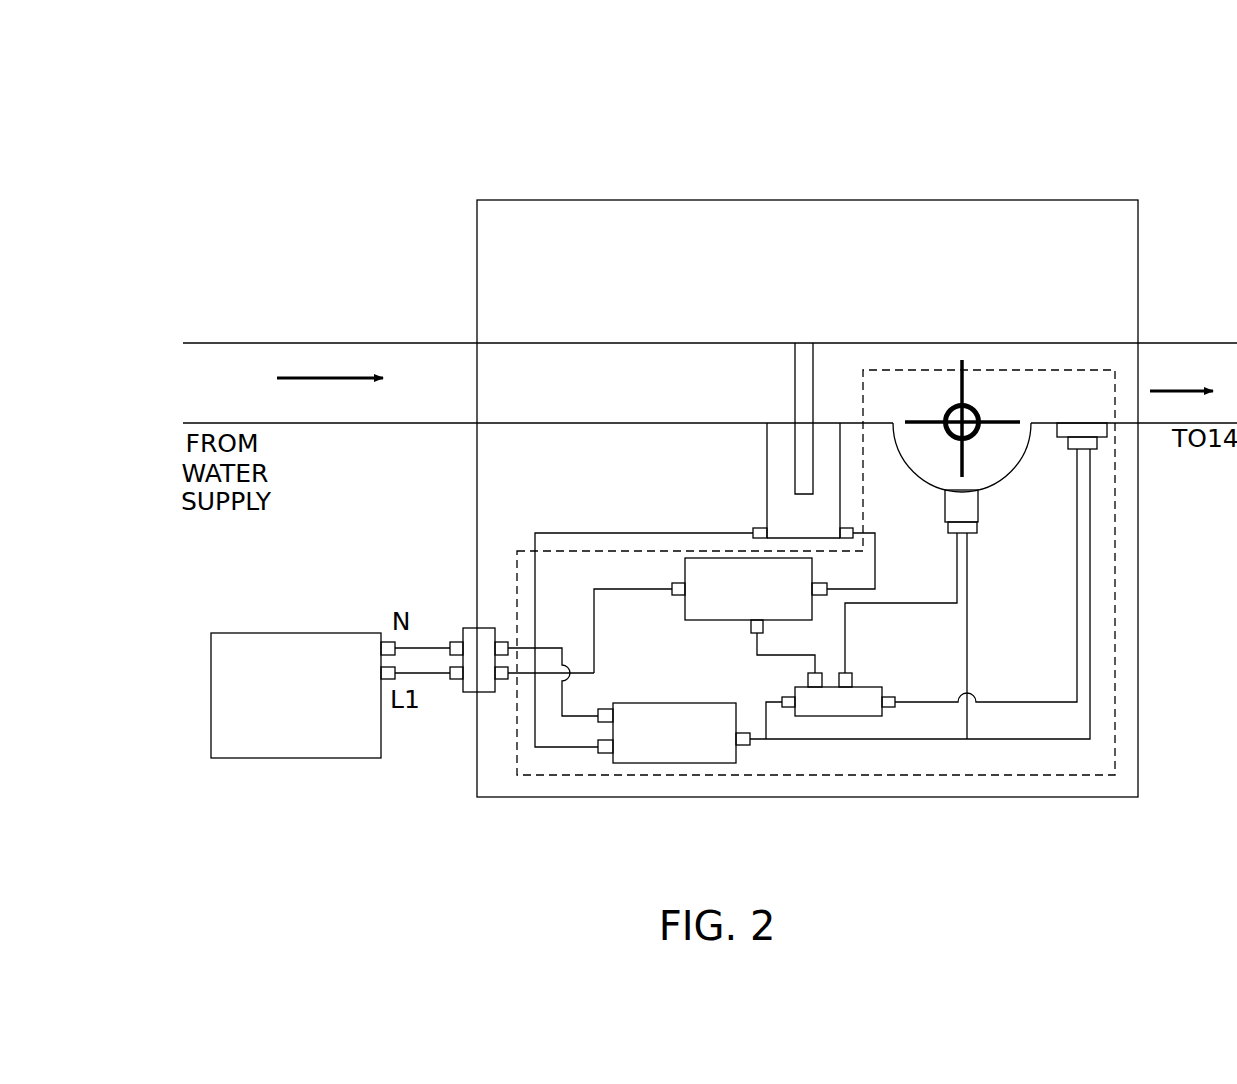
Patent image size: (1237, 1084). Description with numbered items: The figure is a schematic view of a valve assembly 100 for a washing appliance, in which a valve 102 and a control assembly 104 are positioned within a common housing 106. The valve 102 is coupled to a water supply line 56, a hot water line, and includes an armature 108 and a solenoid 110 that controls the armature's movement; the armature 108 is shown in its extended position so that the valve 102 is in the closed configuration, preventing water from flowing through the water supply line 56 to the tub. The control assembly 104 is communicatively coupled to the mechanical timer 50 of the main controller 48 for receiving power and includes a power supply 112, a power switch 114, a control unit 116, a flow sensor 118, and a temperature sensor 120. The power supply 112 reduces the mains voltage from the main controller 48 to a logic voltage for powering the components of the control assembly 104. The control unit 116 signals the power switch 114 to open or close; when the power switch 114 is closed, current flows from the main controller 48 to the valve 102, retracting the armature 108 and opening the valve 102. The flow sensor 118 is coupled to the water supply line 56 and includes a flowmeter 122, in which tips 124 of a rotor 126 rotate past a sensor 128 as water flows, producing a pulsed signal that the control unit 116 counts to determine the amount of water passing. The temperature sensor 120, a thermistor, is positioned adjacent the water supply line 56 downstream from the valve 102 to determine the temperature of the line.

The valve assembly 100 is at (1002, 104).
The common housing 106 is at (631, 200).
The water supply line 56 is at (272, 342).
The armature 108 is at (795, 377).
The valve 102 is at (767, 468).
The solenoid 110 is at (775, 514).
The control assembly 104 is at (960, 775).
The power switch 114 is at (693, 620).
The power supply 112 is at (686, 763).
The control unit 116 is at (840, 716).
The flow sensor 118 is at (993, 509).
The flowmeter 122 is at (931, 509).
The rotor 126 is at (970, 428).
The tips 124 is at (905, 420).
The sensor 128 is at (978, 522).
The temperature sensor 120 is at (1090, 427).
The main controller 48 is at (250, 605).
The mechanical timer 50 is at (296, 633).